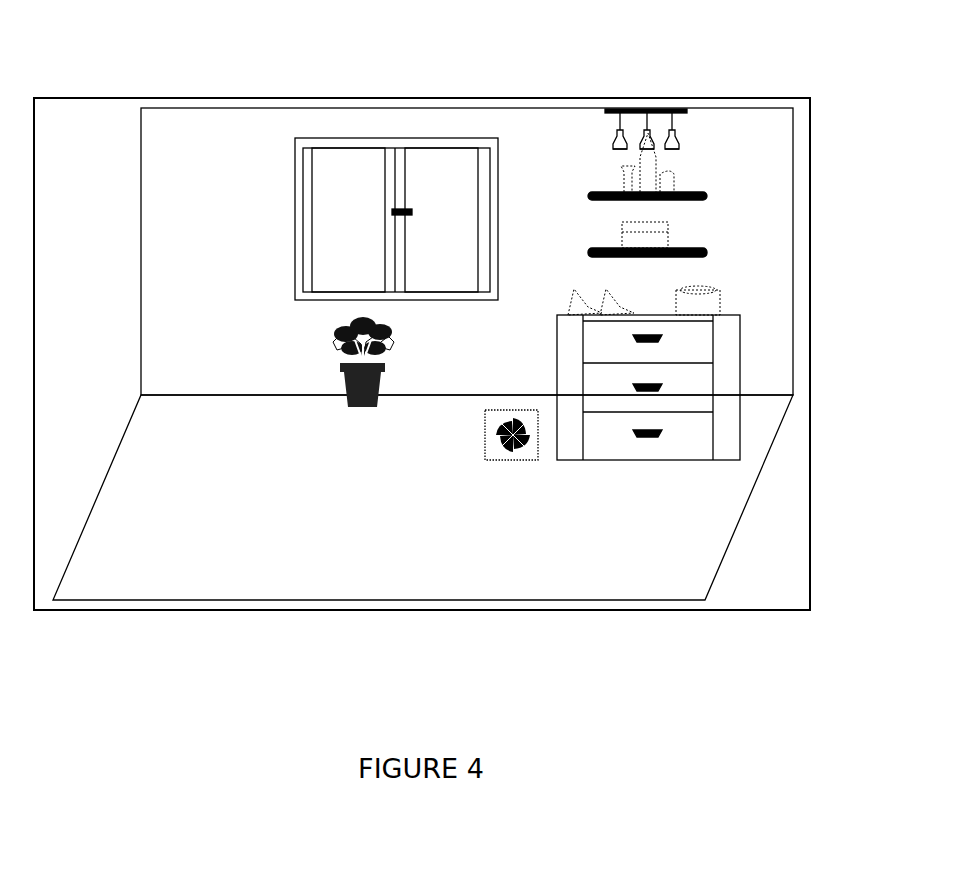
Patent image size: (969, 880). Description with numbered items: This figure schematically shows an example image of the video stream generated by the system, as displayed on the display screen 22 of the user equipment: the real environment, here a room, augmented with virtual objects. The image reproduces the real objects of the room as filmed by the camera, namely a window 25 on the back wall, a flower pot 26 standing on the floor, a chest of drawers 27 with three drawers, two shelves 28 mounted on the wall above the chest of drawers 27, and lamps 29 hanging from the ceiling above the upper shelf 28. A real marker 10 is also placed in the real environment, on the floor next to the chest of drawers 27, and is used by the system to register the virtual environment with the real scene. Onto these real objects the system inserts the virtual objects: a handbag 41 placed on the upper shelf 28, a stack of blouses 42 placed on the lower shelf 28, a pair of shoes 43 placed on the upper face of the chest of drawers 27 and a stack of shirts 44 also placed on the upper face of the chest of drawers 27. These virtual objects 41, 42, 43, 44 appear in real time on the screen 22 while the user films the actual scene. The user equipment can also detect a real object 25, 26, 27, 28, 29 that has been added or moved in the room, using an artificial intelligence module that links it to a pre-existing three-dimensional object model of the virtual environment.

The real marker 10 is at (512, 460).
The display screen 22 is at (722, 98).
The window 25 is at (295, 166).
The flower pot 26 is at (380, 383).
The chest of drawers 27 is at (722, 355).
The shelves 28 is at (707, 196).
The lamps 29 is at (612, 142).
The handbag 41 is at (672, 165).
The stack of blouses 42 is at (665, 230).
The pair of shoes 43 is at (572, 292).
The stack of shirts 44 is at (720, 297).